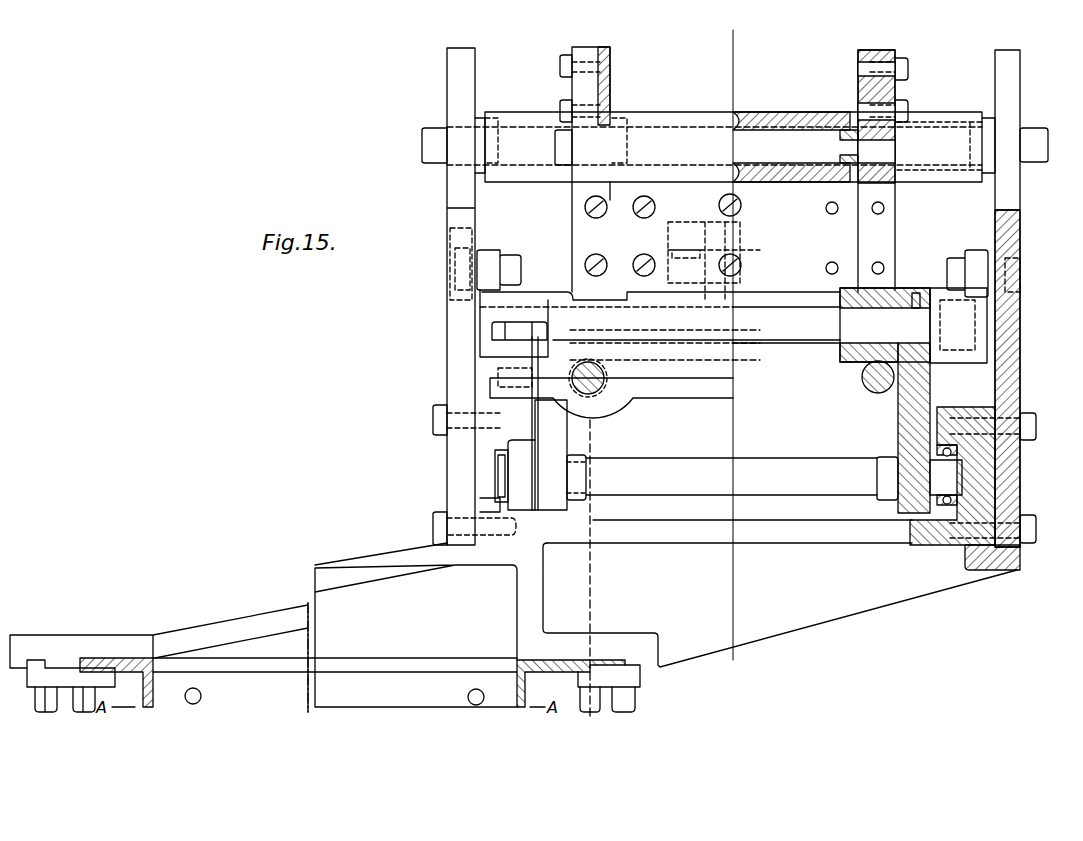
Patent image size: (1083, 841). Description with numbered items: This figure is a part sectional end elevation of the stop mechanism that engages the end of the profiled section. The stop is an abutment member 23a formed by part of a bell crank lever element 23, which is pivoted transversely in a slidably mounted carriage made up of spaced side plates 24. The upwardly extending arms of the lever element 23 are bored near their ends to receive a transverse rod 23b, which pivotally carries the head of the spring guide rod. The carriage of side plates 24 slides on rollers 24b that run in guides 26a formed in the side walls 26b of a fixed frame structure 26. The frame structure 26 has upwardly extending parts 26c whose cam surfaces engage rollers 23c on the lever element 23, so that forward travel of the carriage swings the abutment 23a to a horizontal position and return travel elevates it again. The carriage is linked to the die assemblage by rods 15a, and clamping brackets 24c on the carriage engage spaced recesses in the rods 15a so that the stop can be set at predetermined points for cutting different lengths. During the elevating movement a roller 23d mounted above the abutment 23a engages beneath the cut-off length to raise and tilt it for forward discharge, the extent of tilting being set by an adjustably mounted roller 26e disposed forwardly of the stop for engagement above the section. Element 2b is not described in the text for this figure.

The adjustably mounted roller 26e is at (515, 118).
The roller 23d is at (790, 118).
The upwardly extending parts 26c is at (450, 237).
The rollers 23c is at (452, 268).
The bell crank lever element 23 is at (497, 268).
The transverse rod 23b is at (552, 290).
The abutment member 23a is at (745, 250).
The fixed frame structure 26 is at (1010, 236).
The rods 15a is at (606, 382).
The clamping brackets 24c is at (702, 392).
The side plates 24 is at (560, 430).
The side walls 26b is at (500, 455).
The rollers 24b is at (520, 473).
The guides 26a is at (488, 506).
The shaft 2b is at (950, 458).